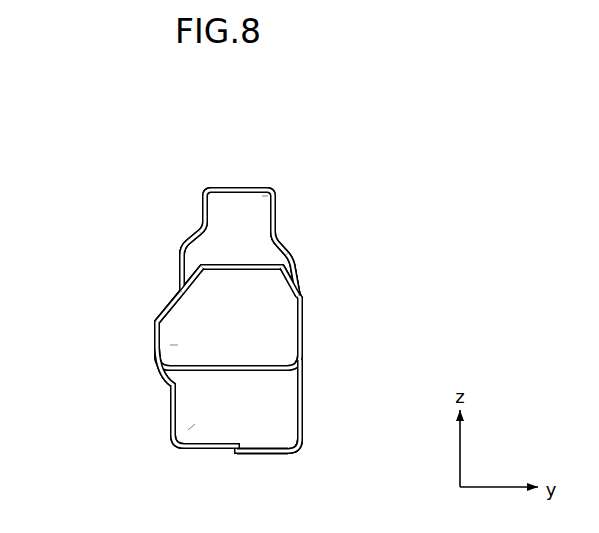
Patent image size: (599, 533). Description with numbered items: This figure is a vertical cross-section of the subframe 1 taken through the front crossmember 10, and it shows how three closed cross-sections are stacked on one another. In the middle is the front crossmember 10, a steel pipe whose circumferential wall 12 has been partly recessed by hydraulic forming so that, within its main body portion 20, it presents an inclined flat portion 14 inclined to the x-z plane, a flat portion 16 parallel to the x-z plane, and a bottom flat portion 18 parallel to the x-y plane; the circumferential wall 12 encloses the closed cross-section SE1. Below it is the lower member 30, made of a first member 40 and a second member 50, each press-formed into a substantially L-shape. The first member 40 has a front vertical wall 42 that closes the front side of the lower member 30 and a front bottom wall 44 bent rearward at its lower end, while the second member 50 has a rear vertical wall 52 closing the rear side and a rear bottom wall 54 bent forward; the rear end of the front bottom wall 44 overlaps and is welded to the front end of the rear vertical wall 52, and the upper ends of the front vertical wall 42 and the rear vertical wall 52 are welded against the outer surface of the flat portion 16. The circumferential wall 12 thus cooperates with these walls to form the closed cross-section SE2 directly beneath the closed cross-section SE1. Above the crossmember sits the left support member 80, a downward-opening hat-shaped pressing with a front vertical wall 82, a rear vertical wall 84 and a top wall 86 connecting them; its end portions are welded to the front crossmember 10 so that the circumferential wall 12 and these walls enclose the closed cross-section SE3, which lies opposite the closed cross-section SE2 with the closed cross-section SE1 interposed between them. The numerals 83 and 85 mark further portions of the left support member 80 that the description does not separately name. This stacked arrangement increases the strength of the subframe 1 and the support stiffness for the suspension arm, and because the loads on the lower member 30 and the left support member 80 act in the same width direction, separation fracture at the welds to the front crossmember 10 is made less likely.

The subframe 1 is at (348, 166).
The front crossmember 10 is at (305, 298).
The circumferential wall 12 is at (238, 266).
The inclined flat portion 14 is at (162, 302).
The flat portion 16 is at (157, 328).
The bottom flat portion 18 is at (228, 372).
The main body portion 20 is at (140, 312).
The lower member 30 is at (310, 453).
The first member 40 is at (307, 402).
The front vertical wall 42 is at (305, 373).
The front bottom wall 44 is at (284, 456).
The second member 50 is at (153, 404).
The rear vertical wall 52 is at (172, 422).
The rear bottom wall 54 is at (217, 451).
The left support member 80 is at (198, 190).
The front vertical wall 82 is at (289, 252).
The right lower wall of upper portion 83 is at (302, 280).
The rear vertical wall 84 is at (178, 249).
The left inclined wall of upper portion 85 is at (176, 277).
The top wall 86 is at (246, 190).
The closed cross-section SE1 is at (178, 345).
The closed cross-section SE2 is at (195, 424).
The closed cross-section SE3 is at (258, 202).